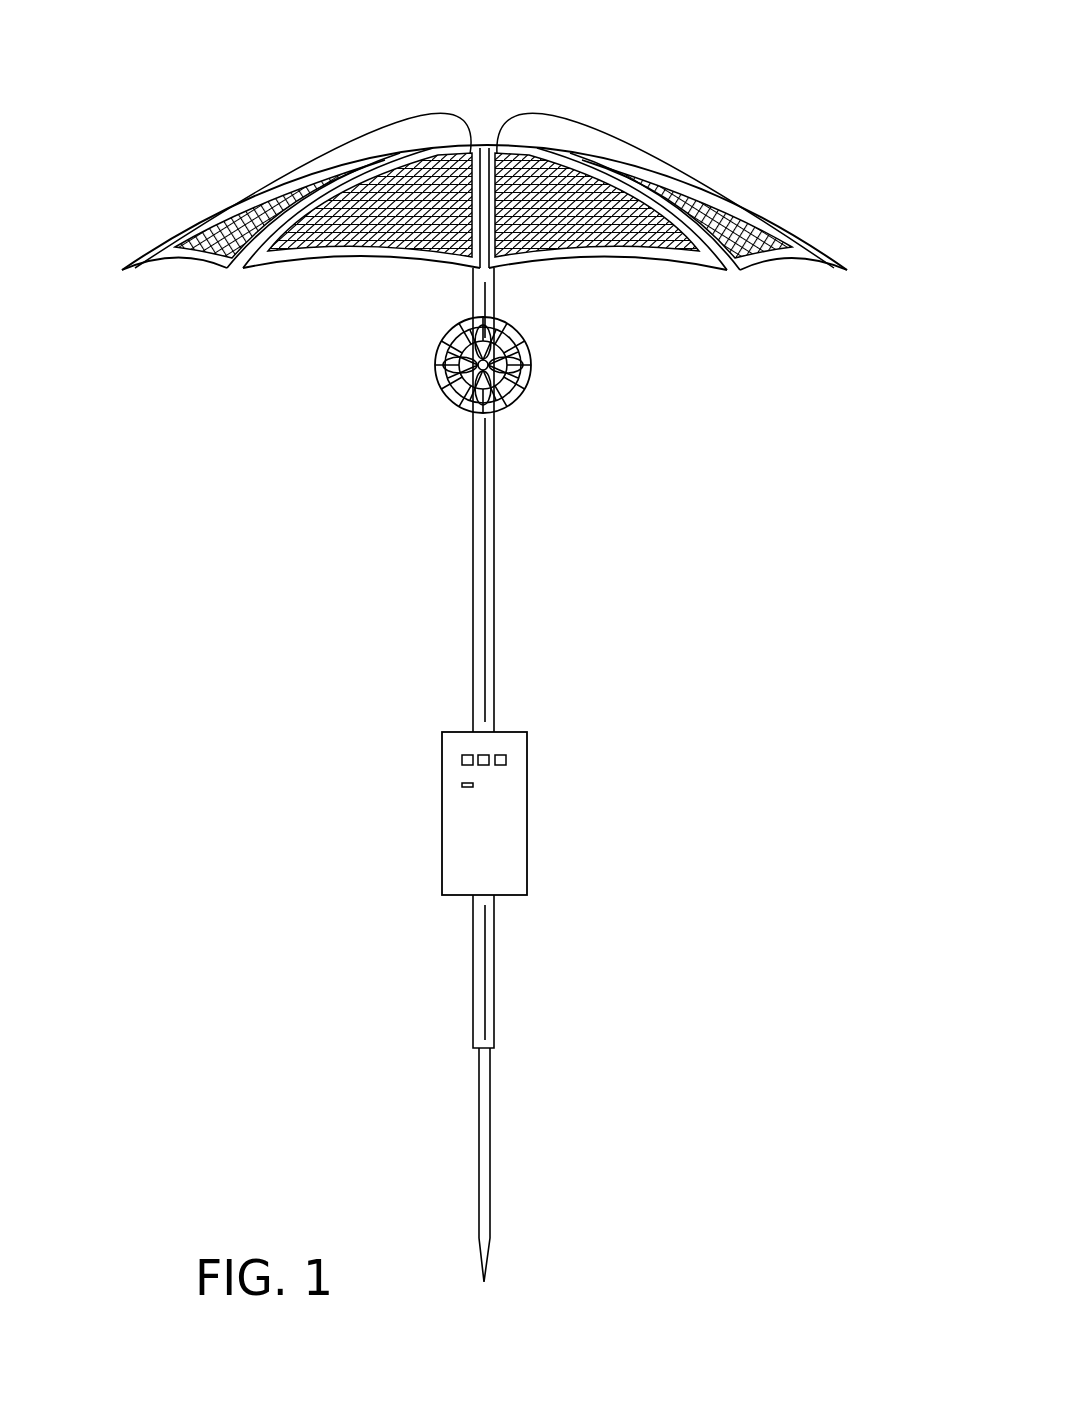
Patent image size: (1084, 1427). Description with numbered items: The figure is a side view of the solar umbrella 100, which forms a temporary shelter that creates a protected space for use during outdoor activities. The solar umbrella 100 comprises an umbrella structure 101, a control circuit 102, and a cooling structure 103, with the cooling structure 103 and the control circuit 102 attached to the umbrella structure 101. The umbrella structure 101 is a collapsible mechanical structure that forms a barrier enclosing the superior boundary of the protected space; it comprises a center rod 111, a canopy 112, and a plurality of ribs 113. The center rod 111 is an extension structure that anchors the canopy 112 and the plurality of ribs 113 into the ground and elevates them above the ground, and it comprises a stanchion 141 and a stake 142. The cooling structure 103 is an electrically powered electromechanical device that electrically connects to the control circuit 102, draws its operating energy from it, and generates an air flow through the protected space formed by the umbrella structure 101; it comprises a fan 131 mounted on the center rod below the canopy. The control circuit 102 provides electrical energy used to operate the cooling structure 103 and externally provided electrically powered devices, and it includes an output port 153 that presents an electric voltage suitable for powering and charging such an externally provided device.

The solar umbrella 100 is at (156, 132).
The umbrella structure 101 is at (770, 213).
The control circuit 102 is at (538, 815).
The cooling structure 103 is at (532, 385).
The center rod 111 is at (333, 953).
The canopy 112 is at (812, 255).
The plurality of ribs 113 is at (485, 183).
The fan 131 is at (458, 405).
The stanchion 141 is at (473, 997).
The stake 142 is at (479, 1093).
The output port 153 is at (468, 790).